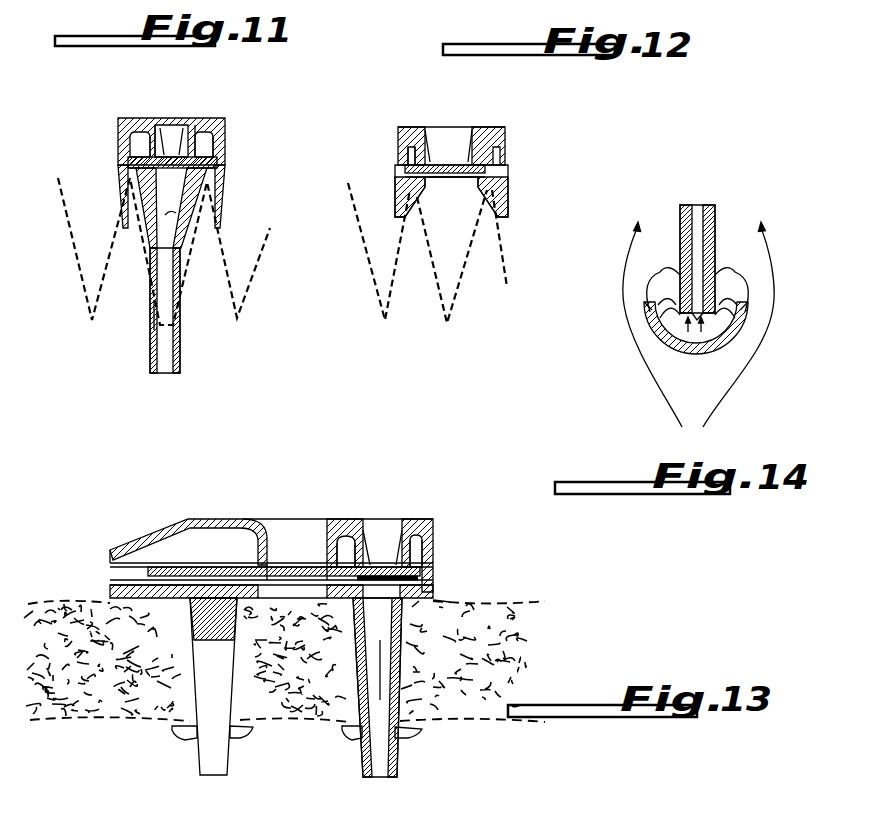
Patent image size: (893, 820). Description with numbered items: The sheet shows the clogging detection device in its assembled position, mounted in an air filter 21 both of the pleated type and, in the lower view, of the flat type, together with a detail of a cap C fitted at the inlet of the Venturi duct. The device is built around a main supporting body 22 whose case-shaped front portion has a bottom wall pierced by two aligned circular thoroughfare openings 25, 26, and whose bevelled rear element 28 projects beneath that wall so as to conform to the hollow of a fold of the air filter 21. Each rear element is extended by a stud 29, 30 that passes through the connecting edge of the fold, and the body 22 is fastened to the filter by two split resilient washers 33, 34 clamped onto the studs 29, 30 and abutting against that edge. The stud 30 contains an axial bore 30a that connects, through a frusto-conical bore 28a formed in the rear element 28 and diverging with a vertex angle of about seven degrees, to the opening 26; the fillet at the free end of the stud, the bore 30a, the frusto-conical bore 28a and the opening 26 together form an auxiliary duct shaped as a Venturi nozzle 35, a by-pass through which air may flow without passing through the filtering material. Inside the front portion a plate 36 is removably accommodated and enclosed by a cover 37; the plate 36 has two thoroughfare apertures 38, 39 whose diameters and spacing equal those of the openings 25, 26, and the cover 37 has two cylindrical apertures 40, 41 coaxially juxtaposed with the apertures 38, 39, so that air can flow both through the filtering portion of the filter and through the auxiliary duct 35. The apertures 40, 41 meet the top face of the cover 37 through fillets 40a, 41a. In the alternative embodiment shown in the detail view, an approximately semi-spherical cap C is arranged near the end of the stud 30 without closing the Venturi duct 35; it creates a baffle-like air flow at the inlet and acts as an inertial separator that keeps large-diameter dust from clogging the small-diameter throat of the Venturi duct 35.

In FIG. 11, the air filter 21 is at (78, 278).
In FIG. 12, the air filter 21 is at (511, 254).
In FIG. 13, the air filter 21 is at (115, 685).
In FIG. 11, the main supporting body 22 is at (116, 185).
In FIG. 12, the main supporting body 22 is at (512, 195).
In FIG. 12, the circular thoroughfare opening 25 is at (436, 184).
In FIG. 13, the circular thoroughfare opening 25 is at (282, 600).
In FIG. 13, the circular thoroughfare opening 26 is at (433, 605).
In FIG. 13, the rear element 28 is at (463, 605).
In FIG. 11, the frusto-conical bore 28a is at (208, 226).
In FIG. 13, the stud 29 is at (217, 762).
In FIG. 11, the stud 30 is at (180, 355).
In FIG. 14, the stud 30 is at (712, 245).
In FIG. 13, the stud 30 is at (395, 767).
In FIG. 14, the bore 30a is at (697, 243).
In FIG. 13, the split resilient washer 33 is at (187, 738).
In FIG. 13, the split resilient washer 34 is at (403, 737).
In FIG. 11, the Venturi nozzle auxiliary duct 35 is at (150, 312).
In FIG. 13, the Venturi nozzle auxiliary duct 35 is at (404, 667).
In FIG. 11, the plate 36 is at (215, 150).
In FIG. 12, the plate 36 is at (500, 170).
In FIG. 13, the plate 36 is at (163, 567).
In FIG. 11, the cover 37 is at (117, 125).
In FIG. 13, the cover 37 is at (217, 520).
In FIG. 12, the thoroughfare aperture 38 is at (467, 160).
In FIG. 13, the thoroughfare aperture 38 is at (300, 598).
In FIG. 11, the thoroughfare aperture 39 is at (171, 142).
In FIG. 13, the thoroughfare aperture 39 is at (373, 560).
In FIG. 12, the cylindrical aperture 40 is at (430, 157).
In FIG. 13, the cylindrical aperture 40 is at (323, 568).
In FIG. 12, the fillet 40a is at (427, 160).
In FIG. 13, the fillet 40a is at (333, 548).
In FIG. 11, the cylindrical aperture 41 is at (156, 140).
In FIG. 13, the cylindrical aperture 41 is at (385, 560).
In FIG. 11, the fillet 41a is at (195, 120).
In FIG. 13, the fillet 41a is at (362, 565).
In FIG. 14, the semi-spherical cap C is at (728, 344).